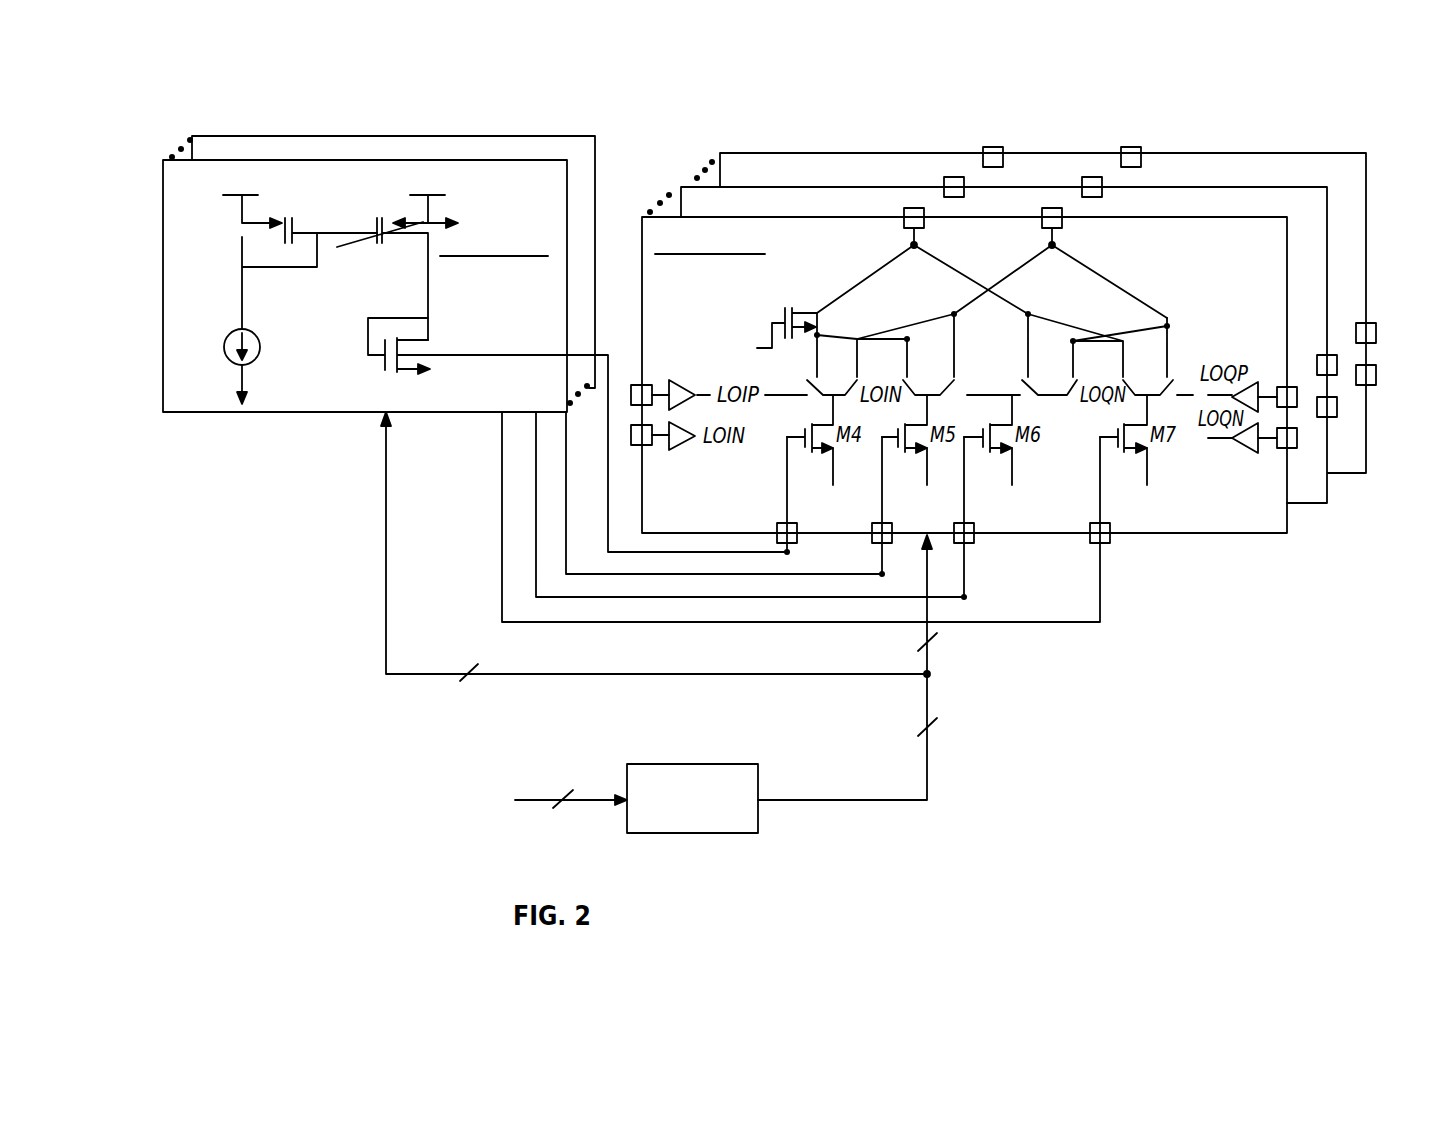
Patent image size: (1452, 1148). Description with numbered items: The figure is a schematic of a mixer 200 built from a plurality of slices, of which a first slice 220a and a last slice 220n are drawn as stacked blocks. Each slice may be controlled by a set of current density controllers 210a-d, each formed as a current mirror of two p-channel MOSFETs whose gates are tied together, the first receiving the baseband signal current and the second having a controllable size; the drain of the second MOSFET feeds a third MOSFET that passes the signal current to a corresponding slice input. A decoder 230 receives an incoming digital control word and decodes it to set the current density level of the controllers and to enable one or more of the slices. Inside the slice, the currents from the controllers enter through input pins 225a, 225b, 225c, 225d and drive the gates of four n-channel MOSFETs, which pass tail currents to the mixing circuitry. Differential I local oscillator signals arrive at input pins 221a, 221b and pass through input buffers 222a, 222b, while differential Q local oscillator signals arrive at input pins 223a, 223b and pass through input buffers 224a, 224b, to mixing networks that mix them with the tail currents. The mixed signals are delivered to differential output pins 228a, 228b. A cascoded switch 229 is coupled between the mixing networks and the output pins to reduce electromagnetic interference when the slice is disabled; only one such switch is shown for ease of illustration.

The mixer 200 is at (158, 138).
The current density controllers 210a-d is at (350, 160).
The slice 220a is at (652, 215).
The slice 220n is at (745, 153).
The input pin 221a is at (645, 385).
The input pin 221b is at (645, 445).
The input buffer 222a is at (678, 380).
The input buffer 222b is at (680, 450).
The input pin 223a is at (1278, 387).
The input pin 223b is at (1278, 448).
The input buffer 224a is at (1255, 404).
The input buffer 224b is at (1243, 452).
The input pin 225a is at (795, 525).
The input pin 225b is at (890, 525).
The input pin 225c is at (972, 525).
The input pin 225d is at (1107, 525).
The output pin 228a is at (905, 208).
The output pin 228b is at (1043, 208).
The cascoded switch 229 is at (787, 314).
The decoder 230 is at (703, 764).